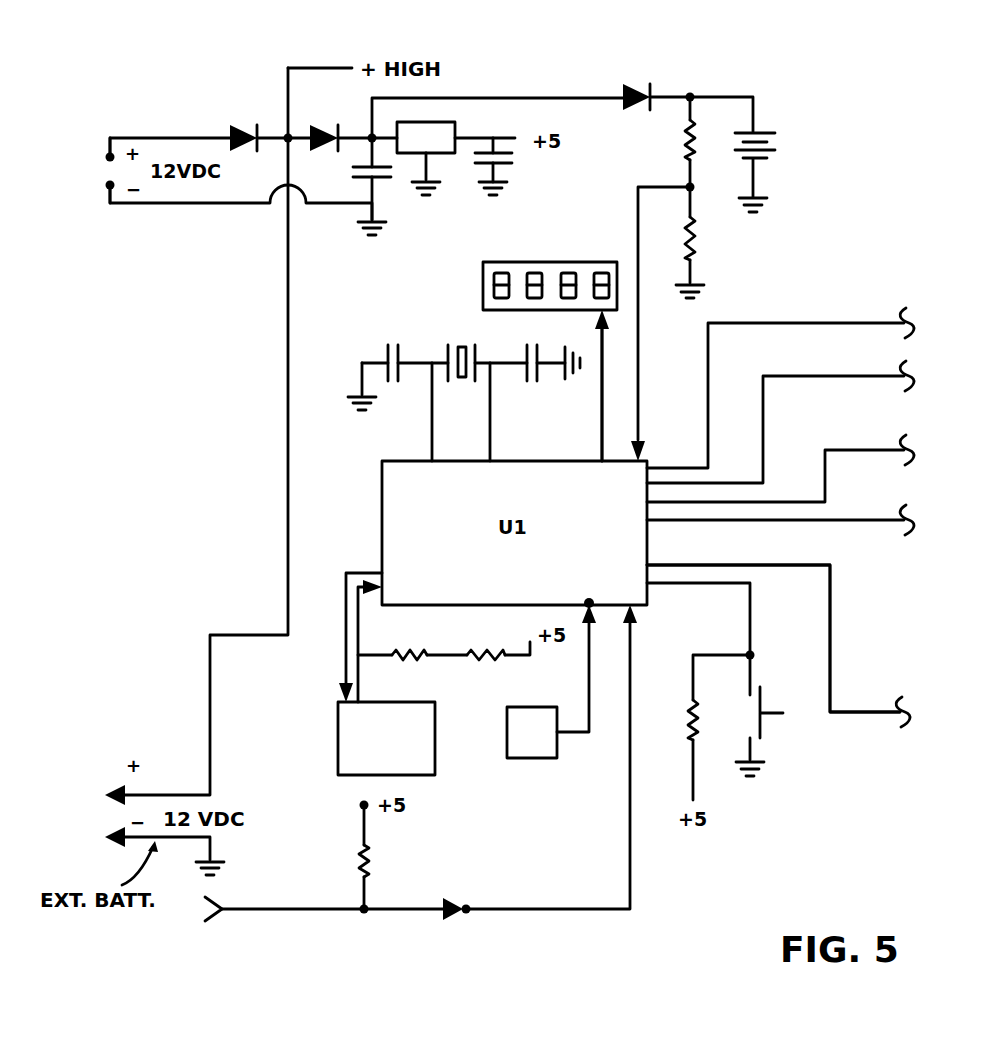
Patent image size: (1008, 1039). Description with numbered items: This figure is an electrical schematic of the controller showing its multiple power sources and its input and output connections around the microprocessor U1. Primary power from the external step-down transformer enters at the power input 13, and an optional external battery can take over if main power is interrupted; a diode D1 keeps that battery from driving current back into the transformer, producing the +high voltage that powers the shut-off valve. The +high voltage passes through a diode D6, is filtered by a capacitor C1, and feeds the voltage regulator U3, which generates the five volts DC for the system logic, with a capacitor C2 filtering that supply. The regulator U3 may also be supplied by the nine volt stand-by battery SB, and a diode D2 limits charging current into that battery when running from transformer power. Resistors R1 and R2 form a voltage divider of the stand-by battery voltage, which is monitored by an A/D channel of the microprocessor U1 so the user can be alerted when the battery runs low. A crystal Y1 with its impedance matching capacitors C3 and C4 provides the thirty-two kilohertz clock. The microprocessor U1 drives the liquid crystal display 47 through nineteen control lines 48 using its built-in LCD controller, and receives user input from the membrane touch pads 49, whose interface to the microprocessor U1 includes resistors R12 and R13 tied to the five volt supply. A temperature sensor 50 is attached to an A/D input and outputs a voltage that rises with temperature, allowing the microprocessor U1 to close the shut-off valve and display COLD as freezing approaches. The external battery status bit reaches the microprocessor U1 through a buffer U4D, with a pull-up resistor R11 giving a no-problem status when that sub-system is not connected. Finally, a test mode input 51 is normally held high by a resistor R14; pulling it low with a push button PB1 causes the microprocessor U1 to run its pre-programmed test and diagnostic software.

The power input 13 is at (123, 132).
The liquid crystal display 47 is at (551, 253).
The control lines 48 is at (600, 448).
The touch pads 49 is at (386, 738).
The temperature sensor 50 is at (530, 759).
The test mode input 51 is at (755, 806).
The diode D1 is at (243, 122).
The diode D6 is at (321, 122).
The diode D2 is at (631, 80).
The voltage regulator U3 is at (447, 122).
The capacitor C1 is at (355, 176).
The capacitor C2 is at (513, 162).
The impedance matching capacitor C3 is at (391, 344).
The impedance matching capacitor C4 is at (532, 383).
The resistor R1 is at (683, 155).
The resistor R2 is at (692, 250).
The stand-by battery SB is at (777, 138).
The crystal Y1 is at (462, 334).
The microprocessor U1 is at (589, 598).
The resistor R12 is at (411, 652).
The resistor R13 is at (494, 658).
The resistor R14 is at (688, 722).
The push button PB1 is at (767, 697).
The pull-up resistor R11 is at (370, 860).
The buffer U4D is at (455, 921).